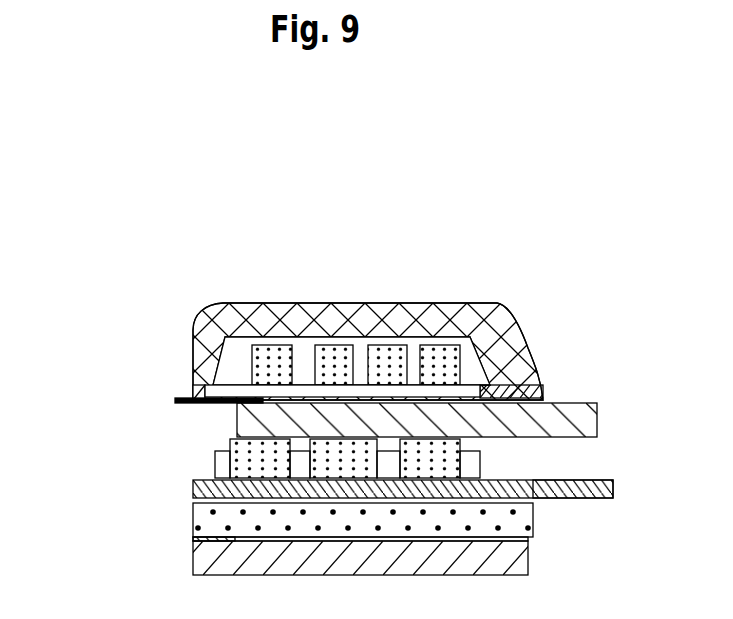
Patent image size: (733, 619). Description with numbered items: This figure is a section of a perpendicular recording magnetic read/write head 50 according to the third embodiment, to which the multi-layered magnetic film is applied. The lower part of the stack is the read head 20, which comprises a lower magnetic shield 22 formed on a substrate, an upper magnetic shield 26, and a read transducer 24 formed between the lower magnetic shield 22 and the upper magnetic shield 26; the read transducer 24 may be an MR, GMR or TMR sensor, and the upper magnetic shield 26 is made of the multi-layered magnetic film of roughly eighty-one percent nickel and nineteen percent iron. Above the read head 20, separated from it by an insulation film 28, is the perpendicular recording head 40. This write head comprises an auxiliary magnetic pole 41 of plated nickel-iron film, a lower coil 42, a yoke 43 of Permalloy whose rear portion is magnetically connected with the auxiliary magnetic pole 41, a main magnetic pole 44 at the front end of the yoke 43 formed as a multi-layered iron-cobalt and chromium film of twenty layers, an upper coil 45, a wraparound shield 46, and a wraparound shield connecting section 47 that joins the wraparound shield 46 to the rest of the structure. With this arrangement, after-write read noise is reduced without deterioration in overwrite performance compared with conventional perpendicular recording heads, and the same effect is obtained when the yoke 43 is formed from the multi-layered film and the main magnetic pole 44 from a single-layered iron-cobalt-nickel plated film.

The perpendicular recording magnetic read/write head 50 is at (138, 222).
The perpendicular recording head 40 is at (90, 365).
The wraparound shield connecting section 47 is at (298, 320).
The upper coil 45 is at (339, 367).
The wraparound shield 46 is at (193, 392).
The main magnetic pole 44 is at (176, 401).
The yoke 43 is at (237, 427).
The lower coil 42 is at (240, 461).
The auxiliary magnetic pole 41 is at (193, 490).
The insulation film 28 is at (538, 502).
The read head 20 is at (92, 510).
The upper magnetic shield 26 is at (193, 522).
The read transducer 24 is at (193, 540).
The lower magnetic shield 22 is at (193, 562).